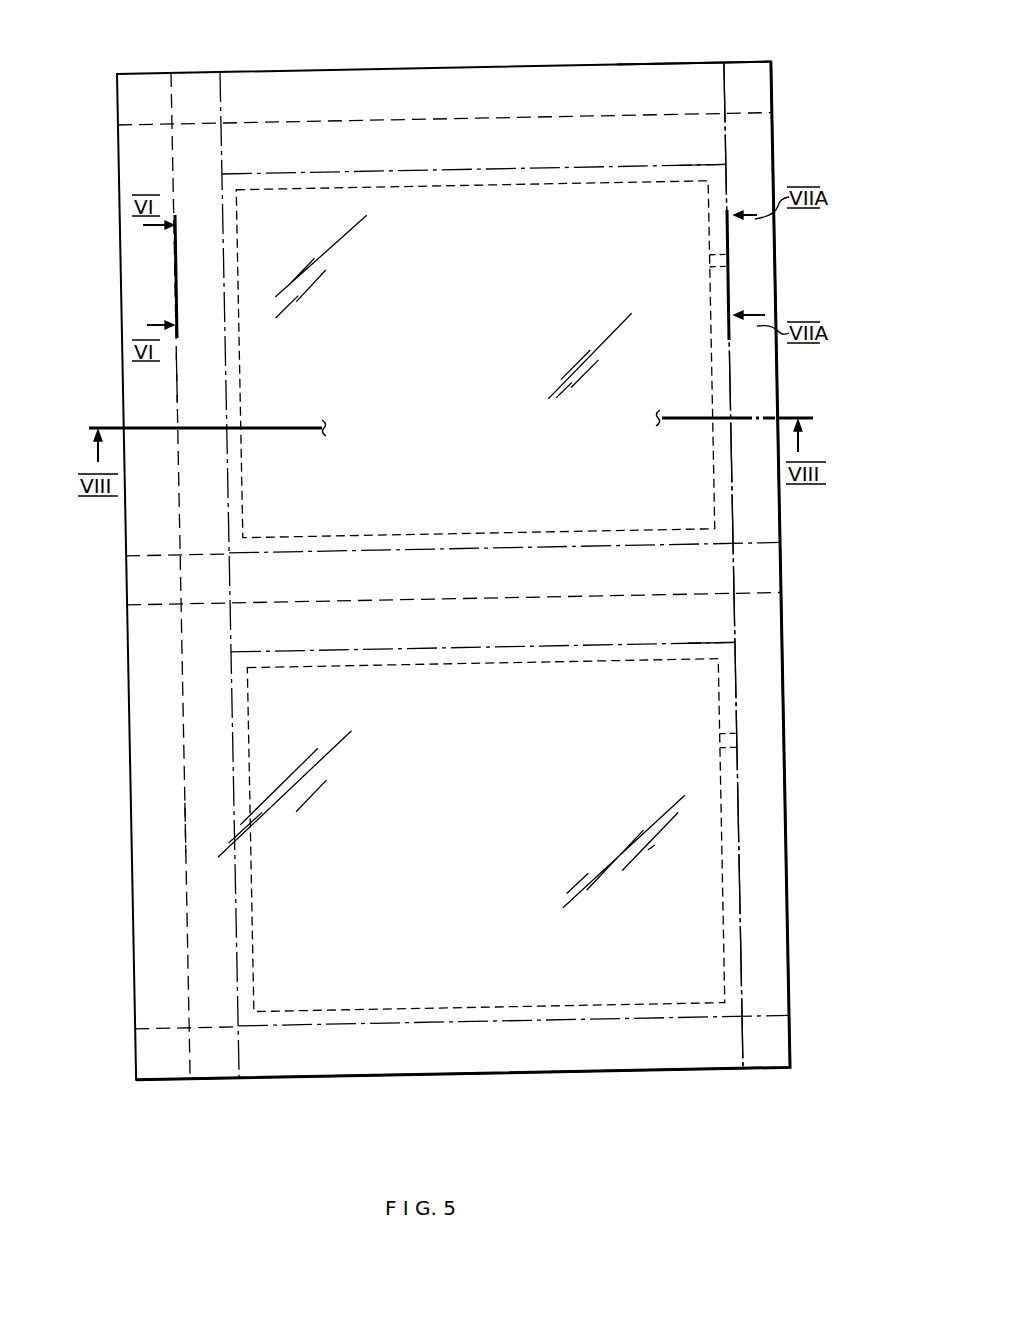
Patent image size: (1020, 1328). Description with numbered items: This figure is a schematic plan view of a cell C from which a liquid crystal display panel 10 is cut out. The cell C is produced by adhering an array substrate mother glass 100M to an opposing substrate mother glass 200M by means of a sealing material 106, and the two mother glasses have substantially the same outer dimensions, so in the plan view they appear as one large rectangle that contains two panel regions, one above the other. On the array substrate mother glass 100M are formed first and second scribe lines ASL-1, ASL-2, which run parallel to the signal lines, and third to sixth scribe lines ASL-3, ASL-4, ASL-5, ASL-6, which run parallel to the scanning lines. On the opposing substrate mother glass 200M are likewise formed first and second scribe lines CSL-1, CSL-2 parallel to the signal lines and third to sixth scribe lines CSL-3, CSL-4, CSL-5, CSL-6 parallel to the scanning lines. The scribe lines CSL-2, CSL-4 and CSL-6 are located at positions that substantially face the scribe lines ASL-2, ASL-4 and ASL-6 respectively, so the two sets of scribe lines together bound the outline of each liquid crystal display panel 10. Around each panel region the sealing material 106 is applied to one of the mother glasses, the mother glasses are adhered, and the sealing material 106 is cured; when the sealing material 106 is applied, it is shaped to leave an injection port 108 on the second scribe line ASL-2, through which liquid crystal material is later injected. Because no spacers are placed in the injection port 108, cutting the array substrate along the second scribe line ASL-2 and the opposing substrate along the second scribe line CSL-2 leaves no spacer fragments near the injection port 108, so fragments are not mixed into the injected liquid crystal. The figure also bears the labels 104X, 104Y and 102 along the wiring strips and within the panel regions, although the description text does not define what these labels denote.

The array substrate mother glass 100M is at (453, 550).
The opposing substrate mother glass 200M is at (441, 70).
The cell C is at (672, 54).
The first scribe line ASL-1 is at (190, 1078).
The second scribe line ASL-2 is at (741, 1042).
The third scribe line ASL-3 is at (130, 124).
The fourth scribe line ASL-4 is at (163, 557).
The fifth scribe line ASL-5 is at (160, 607).
The sixth scribe line ASL-6 is at (170, 1030).
The first scribe line CSL-1 is at (240, 1057).
The second scribe line CSL-2 is at (742, 966).
The third scribe line CSL-3 is at (400, 170).
The fourth scribe line CSL-4 is at (383, 553).
The fifth scribe line CSL-5 is at (393, 650).
The sixth scribe line CSL-6 is at (460, 1022).
The X-direction wiring (signal line) 104X is at (710, 138).
The Y-direction wiring (scan line) 104Y is at (192, 378).
The injection port 108 is at (727, 262).
The liquid crystal display panel 10 is at (690, 298).
The sealing material 106 is at (712, 365).
The pixel electrode 102 is at (695, 500).